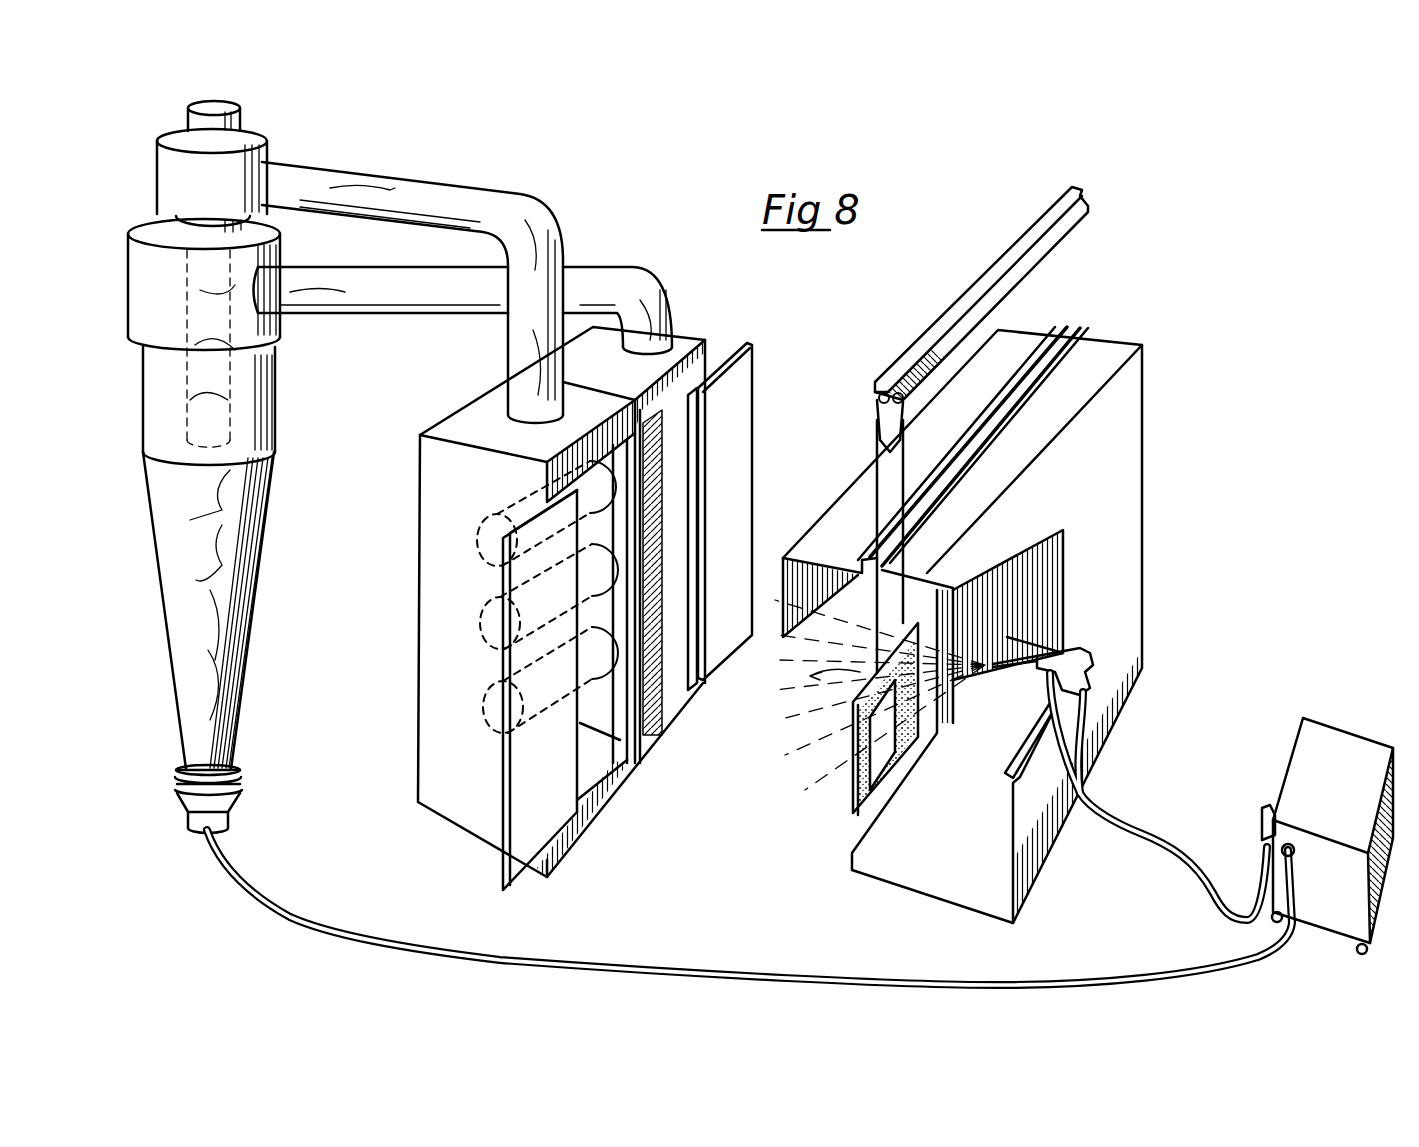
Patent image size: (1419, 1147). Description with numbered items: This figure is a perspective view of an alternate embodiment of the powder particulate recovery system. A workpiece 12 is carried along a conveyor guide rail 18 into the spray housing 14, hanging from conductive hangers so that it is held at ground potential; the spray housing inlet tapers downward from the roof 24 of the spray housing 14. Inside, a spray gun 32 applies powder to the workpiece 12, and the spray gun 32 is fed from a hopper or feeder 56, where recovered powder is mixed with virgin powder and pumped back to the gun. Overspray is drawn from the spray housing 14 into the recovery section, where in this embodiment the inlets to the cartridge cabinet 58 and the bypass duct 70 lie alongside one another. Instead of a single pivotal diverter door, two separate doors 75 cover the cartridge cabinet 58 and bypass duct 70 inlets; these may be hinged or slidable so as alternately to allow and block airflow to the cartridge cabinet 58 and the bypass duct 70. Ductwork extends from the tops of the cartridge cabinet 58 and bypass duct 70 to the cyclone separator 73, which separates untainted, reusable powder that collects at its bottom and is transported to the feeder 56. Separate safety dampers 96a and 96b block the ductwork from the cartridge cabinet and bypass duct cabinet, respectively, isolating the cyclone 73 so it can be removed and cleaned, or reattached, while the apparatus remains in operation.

The workpiece 12 is at (858, 797).
The spray housing 14 is at (1157, 426).
The guide rail 18 is at (938, 335).
The roof 24 is at (1112, 347).
The spray gun 32 is at (1090, 660).
The hopper or feeder 56 is at (1350, 738).
The cartridge cabinet 58 is at (410, 571).
The bypass duct 70 is at (700, 384).
The cyclone separator 73 is at (158, 537).
The doors 75 is at (740, 418).
The safety damper 96a is at (322, 155).
The safety damper 96b is at (367, 257).